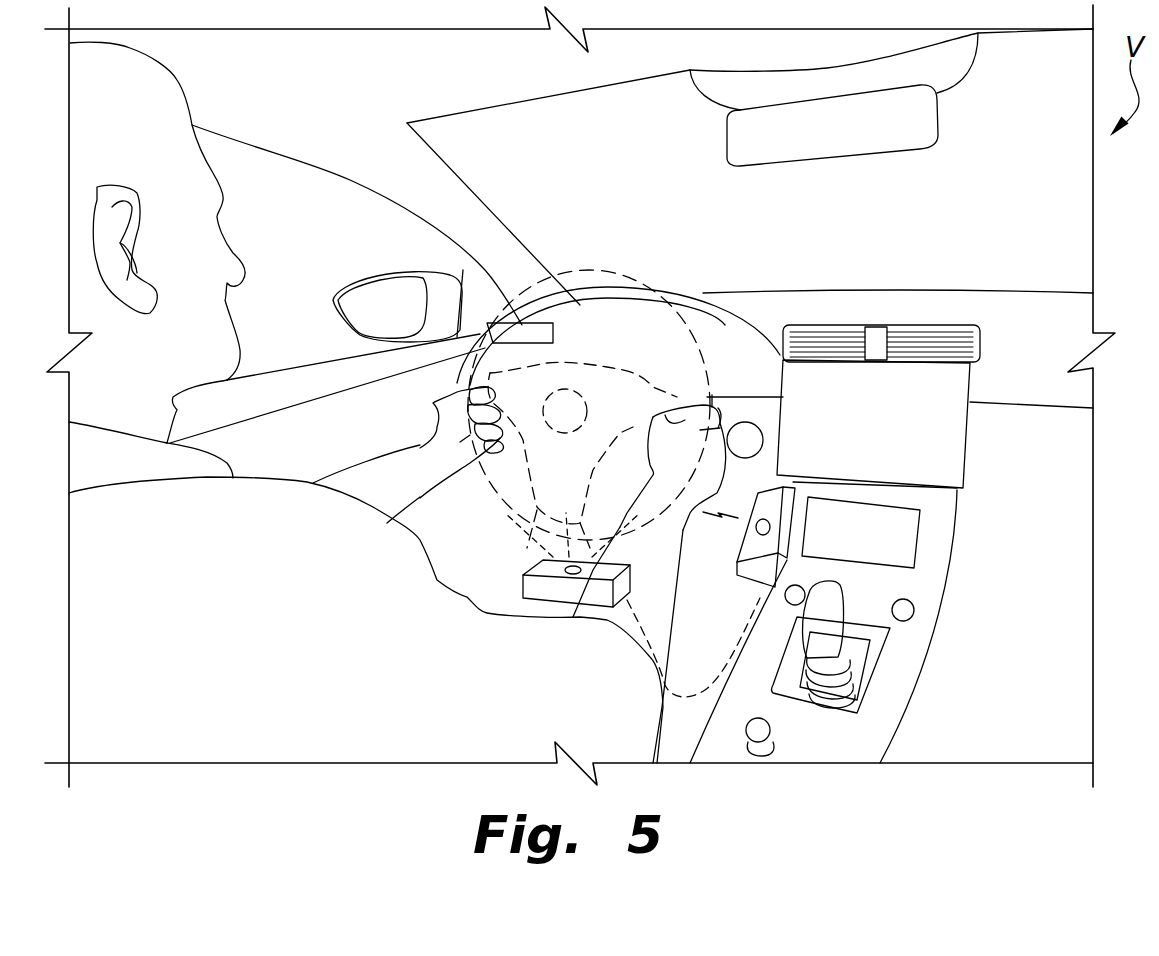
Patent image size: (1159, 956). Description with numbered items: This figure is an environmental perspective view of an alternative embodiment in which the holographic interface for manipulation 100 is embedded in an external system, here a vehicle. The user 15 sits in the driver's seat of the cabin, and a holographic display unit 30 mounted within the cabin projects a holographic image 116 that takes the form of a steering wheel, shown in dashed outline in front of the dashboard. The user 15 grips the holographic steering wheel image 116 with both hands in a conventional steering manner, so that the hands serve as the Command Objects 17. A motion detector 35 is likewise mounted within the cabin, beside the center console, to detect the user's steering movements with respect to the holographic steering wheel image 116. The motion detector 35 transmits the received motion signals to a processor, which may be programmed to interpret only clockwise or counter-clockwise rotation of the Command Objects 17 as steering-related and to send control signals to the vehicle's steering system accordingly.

The holographic interface for manipulation 100 is at (497, 258).
The holographic image 116 is at (595, 263).
The Command Objects 17 is at (442, 413).
The user 15 is at (288, 648).
The holographic display unit 30 is at (523, 582).
The motion detector 35 is at (738, 570).